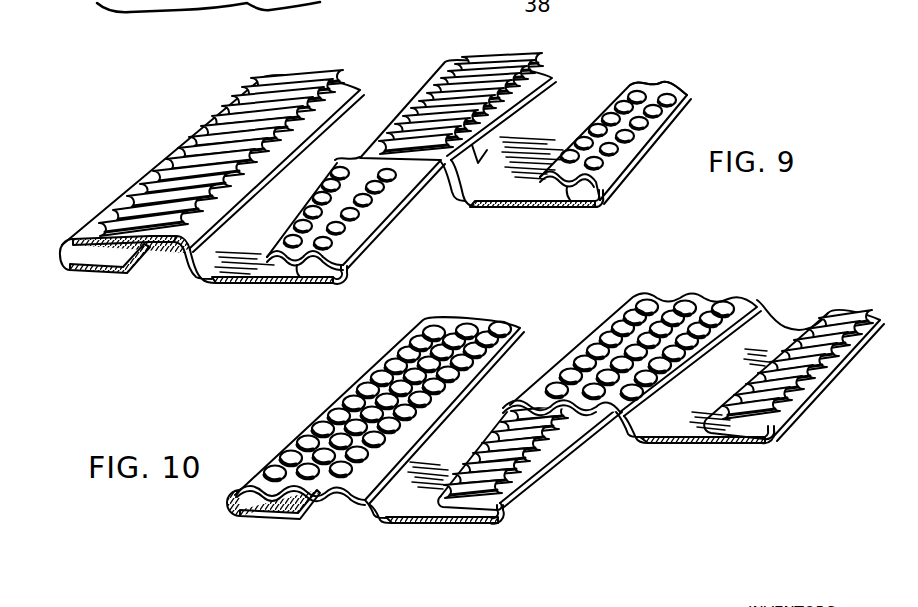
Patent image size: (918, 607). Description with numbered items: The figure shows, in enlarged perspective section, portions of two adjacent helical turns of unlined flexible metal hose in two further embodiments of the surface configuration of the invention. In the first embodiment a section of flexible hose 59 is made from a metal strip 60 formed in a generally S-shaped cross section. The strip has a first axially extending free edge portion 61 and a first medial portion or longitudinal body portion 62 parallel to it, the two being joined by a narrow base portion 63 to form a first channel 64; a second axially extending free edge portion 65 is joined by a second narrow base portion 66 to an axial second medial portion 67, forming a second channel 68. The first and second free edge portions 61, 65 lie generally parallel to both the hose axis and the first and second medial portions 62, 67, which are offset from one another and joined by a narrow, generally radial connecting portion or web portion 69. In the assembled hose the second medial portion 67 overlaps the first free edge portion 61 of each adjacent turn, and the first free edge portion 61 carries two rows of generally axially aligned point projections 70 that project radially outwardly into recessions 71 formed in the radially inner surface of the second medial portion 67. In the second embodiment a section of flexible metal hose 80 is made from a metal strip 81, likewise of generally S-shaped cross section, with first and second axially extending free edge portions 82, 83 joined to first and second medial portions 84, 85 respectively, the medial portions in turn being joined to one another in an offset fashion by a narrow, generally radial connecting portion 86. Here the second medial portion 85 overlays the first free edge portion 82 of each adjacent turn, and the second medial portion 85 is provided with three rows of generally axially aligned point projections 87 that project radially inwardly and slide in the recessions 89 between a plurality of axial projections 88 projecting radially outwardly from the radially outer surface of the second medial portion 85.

In FIG. 9, the flexible hose 59 is at (636, 72).
In FIG. 9, the metal strip 60 is at (683, 86).
In FIG. 9, the first axially extending free edge portion 61 is at (297, 267).
In FIG. 9, the first medial portion 62 is at (266, 284).
In FIG. 9, the narrow base portion 63 is at (352, 238).
In FIG. 9, the first channel 64 is at (338, 283).
In FIG. 9, the second axially extending free edge portion 65 is at (112, 274).
In FIG. 9, the second narrow base portion 66 is at (57, 259).
In FIG. 9, the second medial portion 67 is at (158, 246).
In FIG. 9, the second channel 68 is at (92, 266).
In FIG. 9, the connecting portion 69 is at (208, 280).
In FIG. 9, the point projections 70 is at (331, 262).
In FIG. 9, the recessions 71 is at (478, 172).
In FIG. 10, the flexible metal hose 80 is at (697, 292).
In FIG. 10, the metal strip 81 is at (762, 313).
In FIG. 10, the first axially extending free edge portion 82 is at (470, 500).
In FIG. 10, the second axially extending free edge portion 83 is at (270, 512).
In FIG. 10, the first medial portion 84 is at (420, 523).
In FIG. 10, the second medial portion 85 is at (320, 498).
In FIG. 10, the connecting portion 86 is at (380, 492).
In FIG. 10, the point projections 87 is at (617, 414).
In FIG. 10, the axial projections 88 is at (520, 501).
In FIG. 10, the recessions 89 is at (541, 462).